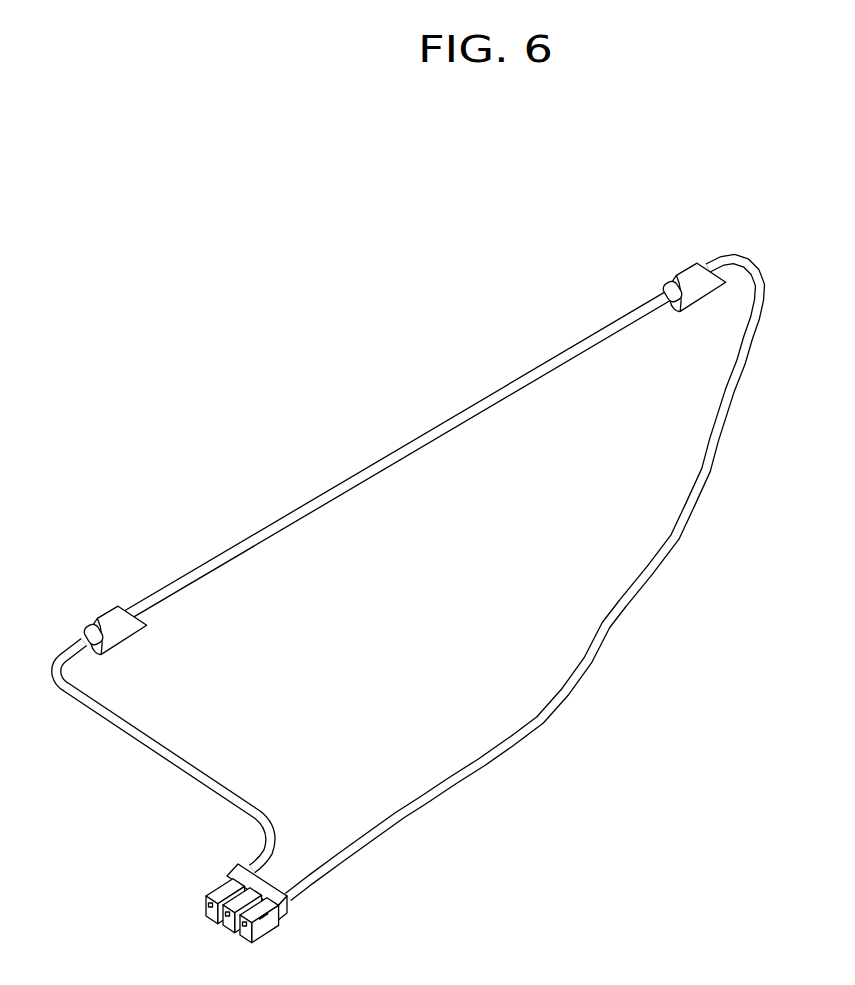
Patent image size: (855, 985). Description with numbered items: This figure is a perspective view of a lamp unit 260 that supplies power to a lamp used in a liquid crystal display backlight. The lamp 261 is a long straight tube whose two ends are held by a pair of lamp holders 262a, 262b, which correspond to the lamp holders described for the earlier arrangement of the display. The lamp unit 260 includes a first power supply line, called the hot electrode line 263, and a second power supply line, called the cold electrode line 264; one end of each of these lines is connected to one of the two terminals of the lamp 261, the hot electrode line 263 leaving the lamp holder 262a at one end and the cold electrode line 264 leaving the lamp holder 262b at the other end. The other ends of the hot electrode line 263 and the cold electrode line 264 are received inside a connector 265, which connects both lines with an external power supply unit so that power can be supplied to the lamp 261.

The lamp unit 260 is at (496, 340).
The lamp 261 is at (311, 498).
The lamp holder 262a is at (95, 621).
The lamp holder 262b is at (689, 259).
The hot electrode line 263 is at (164, 769).
The cold electrode line 264 is at (677, 534).
The connector 265 is at (282, 925).